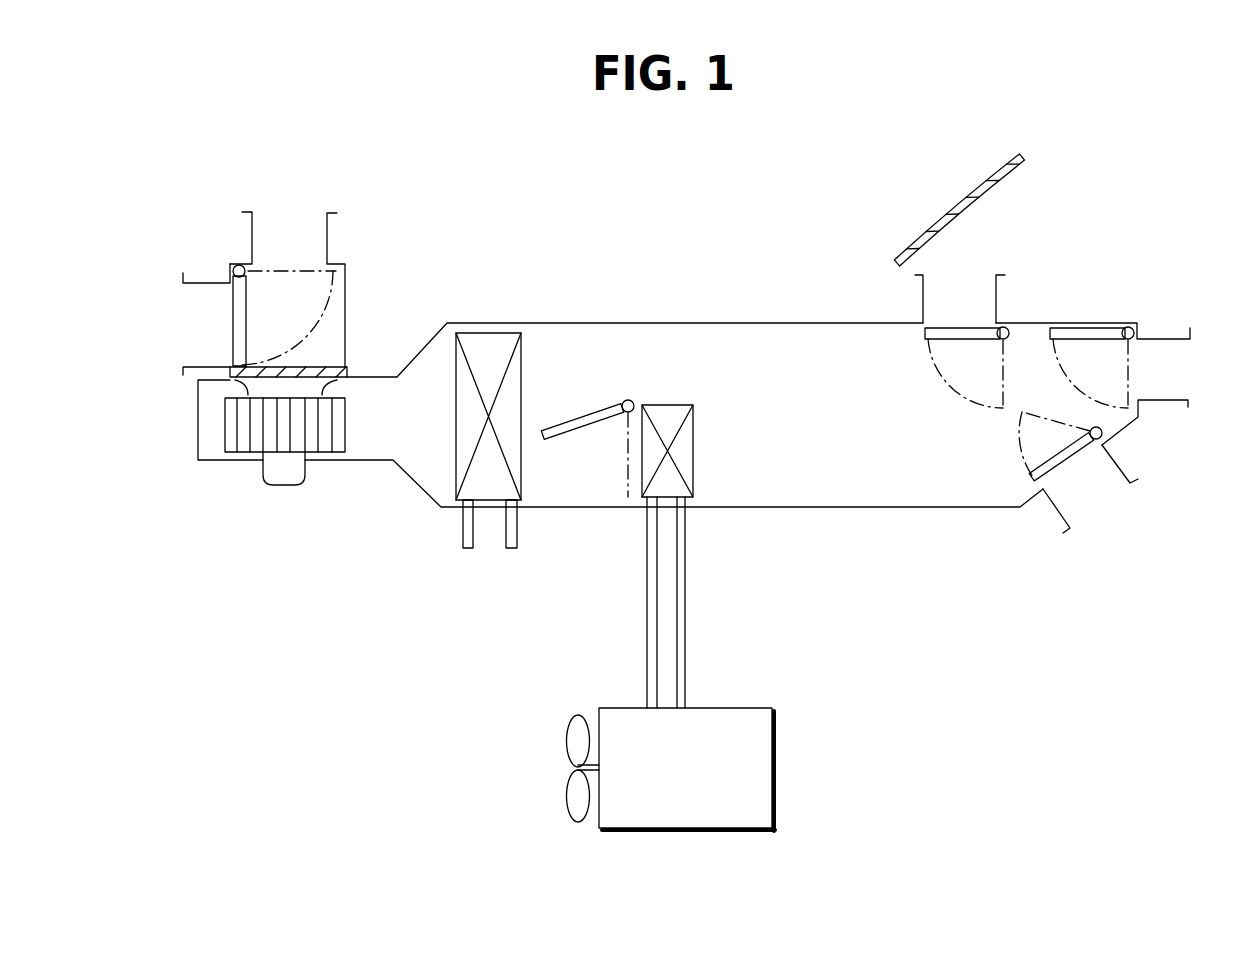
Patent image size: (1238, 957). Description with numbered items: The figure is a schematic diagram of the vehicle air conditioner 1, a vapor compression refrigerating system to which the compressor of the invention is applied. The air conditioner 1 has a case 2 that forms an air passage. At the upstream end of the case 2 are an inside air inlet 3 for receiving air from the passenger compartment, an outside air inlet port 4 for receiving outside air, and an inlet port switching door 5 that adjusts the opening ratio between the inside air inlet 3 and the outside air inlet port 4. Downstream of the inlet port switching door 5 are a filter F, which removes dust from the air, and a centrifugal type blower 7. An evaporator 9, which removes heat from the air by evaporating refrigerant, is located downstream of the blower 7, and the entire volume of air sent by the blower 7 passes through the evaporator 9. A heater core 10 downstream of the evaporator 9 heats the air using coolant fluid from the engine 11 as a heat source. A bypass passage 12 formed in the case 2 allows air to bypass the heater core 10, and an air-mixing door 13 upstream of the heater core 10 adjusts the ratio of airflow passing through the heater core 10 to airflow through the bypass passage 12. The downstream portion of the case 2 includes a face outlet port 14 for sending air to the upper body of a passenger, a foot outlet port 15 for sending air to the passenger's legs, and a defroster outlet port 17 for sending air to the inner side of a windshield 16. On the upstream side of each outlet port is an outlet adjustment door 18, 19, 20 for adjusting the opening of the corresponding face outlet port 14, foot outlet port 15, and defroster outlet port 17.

The vehicle air conditioner 1 is at (642, 224).
The case 2 is at (570, 320).
The inside air inlet 3 is at (205, 305).
The outside air inlet port 4 is at (288, 228).
The inlet port switching door 5 is at (233, 331).
The filter F is at (320, 367).
The centrifugal type blower 7 is at (293, 477).
The evaporator 9 is at (487, 343).
The heater core 10 is at (693, 463).
The engine 11 is at (775, 790).
The bypass passage 12 is at (718, 343).
The air-mixing door 13 is at (565, 437).
The face outlet port 14 is at (1167, 373).
The foot outlet port 15 is at (1093, 497).
The windshield 16 is at (935, 218).
The defroster outlet port 17 is at (957, 288).
The outlet adjustment door 18 is at (1083, 322).
The outlet adjustment door 19 is at (1055, 475).
The outlet adjustment door 20 is at (967, 327).